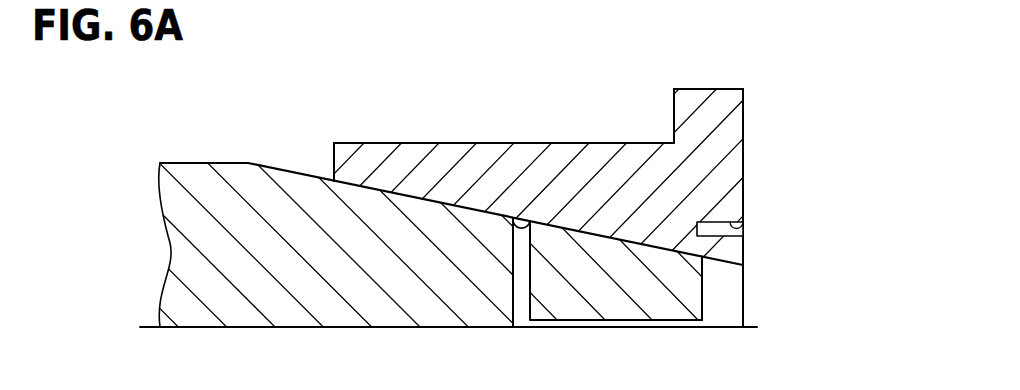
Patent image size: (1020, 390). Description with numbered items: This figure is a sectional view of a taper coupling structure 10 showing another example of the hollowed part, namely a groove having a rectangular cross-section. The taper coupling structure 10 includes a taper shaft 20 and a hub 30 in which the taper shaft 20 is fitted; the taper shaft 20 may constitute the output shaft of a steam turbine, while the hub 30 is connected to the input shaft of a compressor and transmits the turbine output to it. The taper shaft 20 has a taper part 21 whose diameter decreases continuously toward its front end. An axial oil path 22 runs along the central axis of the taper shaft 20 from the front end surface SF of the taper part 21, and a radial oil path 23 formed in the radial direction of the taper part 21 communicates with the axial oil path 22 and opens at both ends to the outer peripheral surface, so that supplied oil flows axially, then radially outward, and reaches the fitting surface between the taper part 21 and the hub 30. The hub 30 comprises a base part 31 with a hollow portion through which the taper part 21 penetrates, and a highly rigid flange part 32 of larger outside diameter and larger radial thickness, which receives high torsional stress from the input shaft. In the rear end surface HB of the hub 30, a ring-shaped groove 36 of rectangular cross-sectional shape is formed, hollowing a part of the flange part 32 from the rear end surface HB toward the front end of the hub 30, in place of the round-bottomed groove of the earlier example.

The taper coupling structure 10 is at (338, 106).
The taper shaft 20 is at (228, 163).
The taper part 21 is at (305, 173).
The axial oil path 22 is at (682, 325).
The radial oil path 23 is at (522, 263).
The hub 30 is at (373, 143).
The base part 31 is at (417, 143).
The flange part 32 is at (696, 89).
The groove 36 is at (743, 223).
The rear end surface HB is at (743, 125).
The front end surface SF is at (702, 311).